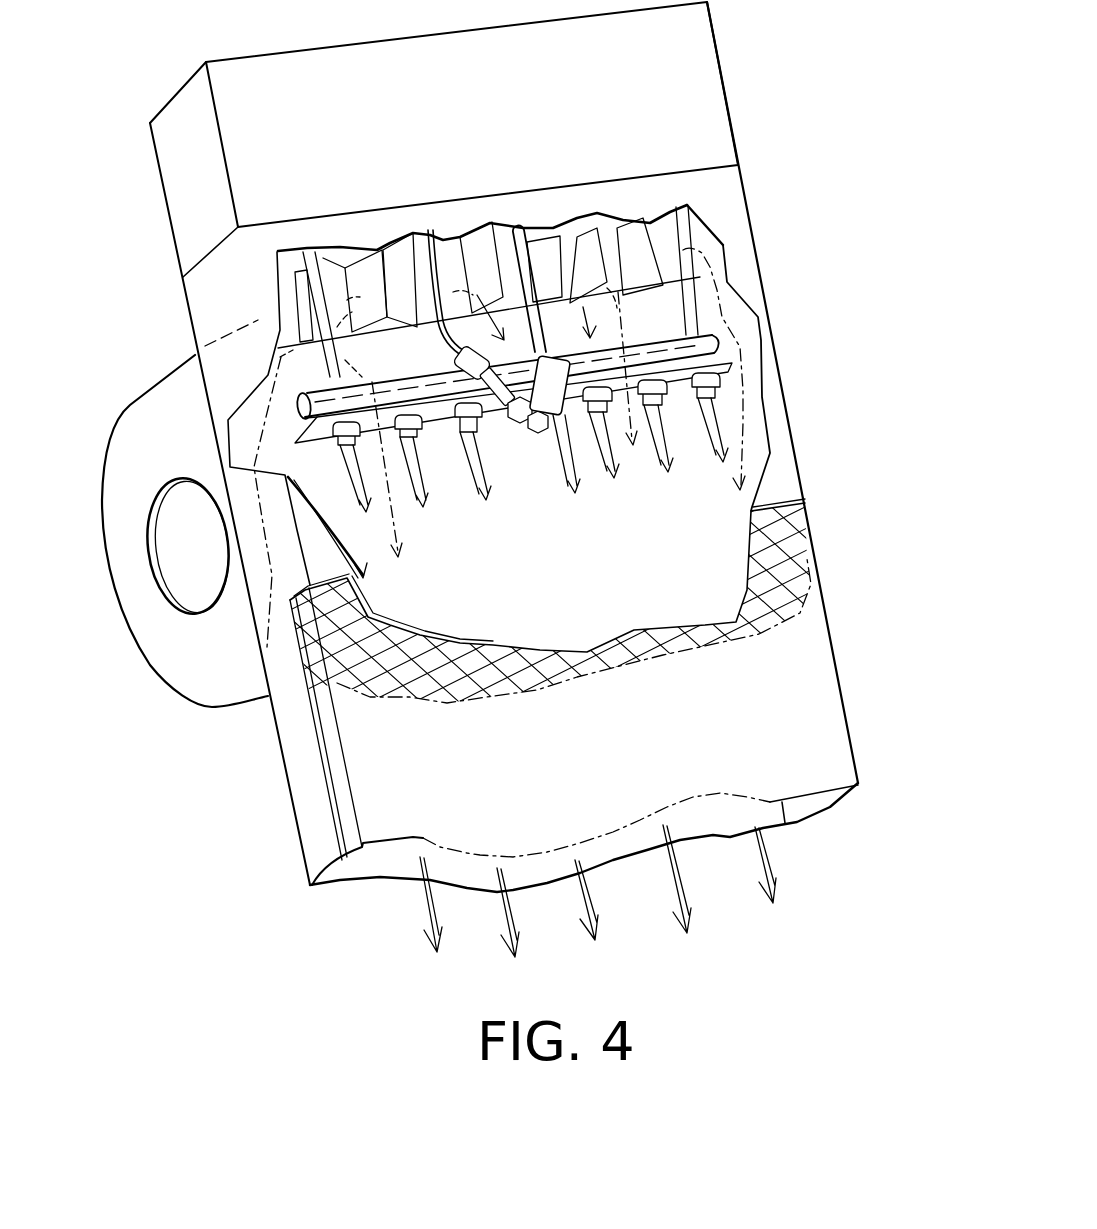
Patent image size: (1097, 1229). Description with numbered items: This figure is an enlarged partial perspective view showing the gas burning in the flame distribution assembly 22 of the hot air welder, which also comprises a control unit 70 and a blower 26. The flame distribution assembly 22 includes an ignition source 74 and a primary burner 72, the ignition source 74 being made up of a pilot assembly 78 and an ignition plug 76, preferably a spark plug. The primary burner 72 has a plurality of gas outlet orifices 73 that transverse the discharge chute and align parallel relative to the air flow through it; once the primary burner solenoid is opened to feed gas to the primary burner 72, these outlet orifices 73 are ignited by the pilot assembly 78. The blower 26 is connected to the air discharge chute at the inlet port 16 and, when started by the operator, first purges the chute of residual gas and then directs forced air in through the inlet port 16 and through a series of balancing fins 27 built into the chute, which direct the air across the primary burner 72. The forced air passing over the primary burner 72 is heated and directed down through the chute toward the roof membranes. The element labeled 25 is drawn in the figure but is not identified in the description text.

The control unit 70 is at (747, 62).
The primary burner 72 is at (718, 340).
The gas outlet orifices 73 is at (423, 437).
The ignition source 74 is at (428, 272).
The ignition plug 76 is at (510, 240).
The pilot assembly 78 is at (562, 372).
The balancing fins 27 is at (635, 240).
The mounting plate 25 is at (730, 370).
The flame distribution assembly 22 is at (390, 363).
The inlet port 16 is at (151, 509).
The blower 26 is at (175, 648).